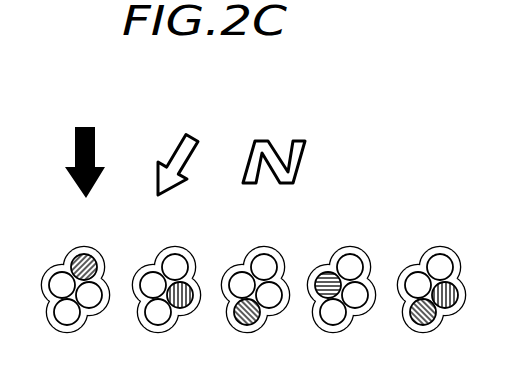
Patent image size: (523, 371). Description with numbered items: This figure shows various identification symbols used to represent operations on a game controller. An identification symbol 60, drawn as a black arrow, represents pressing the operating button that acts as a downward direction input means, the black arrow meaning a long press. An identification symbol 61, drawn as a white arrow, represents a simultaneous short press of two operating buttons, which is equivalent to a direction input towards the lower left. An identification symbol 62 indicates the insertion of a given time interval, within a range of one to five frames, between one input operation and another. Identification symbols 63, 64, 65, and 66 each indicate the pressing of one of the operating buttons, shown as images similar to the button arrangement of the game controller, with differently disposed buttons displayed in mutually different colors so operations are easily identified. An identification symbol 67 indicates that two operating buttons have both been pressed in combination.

The identification symbol 60 is at (100, 142).
The identification symbol 61 is at (206, 128).
The identification symbol 62 is at (311, 145).
The identification symbol 63 is at (110, 260).
The identification symbol 64 is at (198, 258).
The identification symbol 65 is at (285, 260).
The identification symbol 66 is at (373, 258).
The identification symbol 67 is at (472, 233).